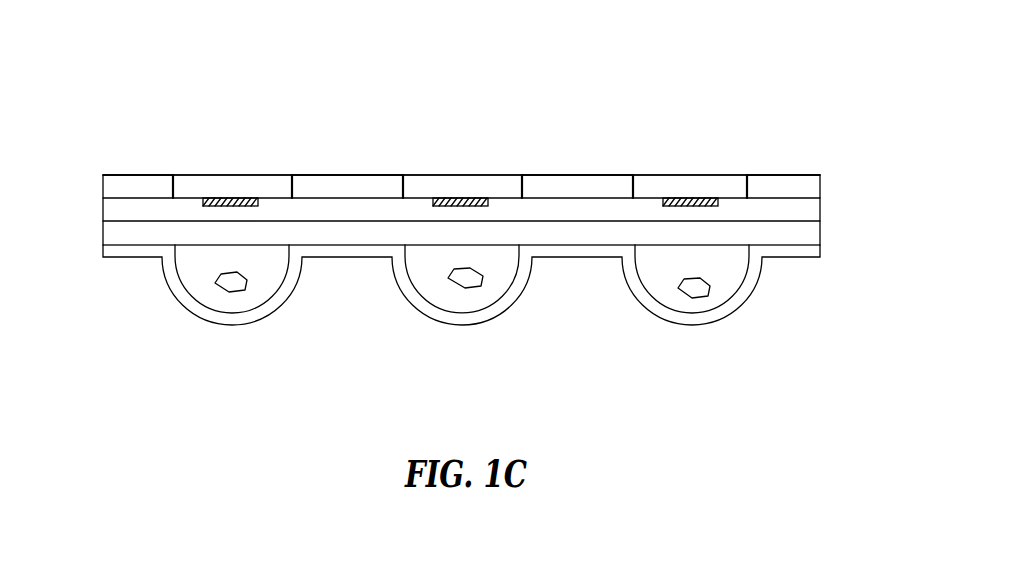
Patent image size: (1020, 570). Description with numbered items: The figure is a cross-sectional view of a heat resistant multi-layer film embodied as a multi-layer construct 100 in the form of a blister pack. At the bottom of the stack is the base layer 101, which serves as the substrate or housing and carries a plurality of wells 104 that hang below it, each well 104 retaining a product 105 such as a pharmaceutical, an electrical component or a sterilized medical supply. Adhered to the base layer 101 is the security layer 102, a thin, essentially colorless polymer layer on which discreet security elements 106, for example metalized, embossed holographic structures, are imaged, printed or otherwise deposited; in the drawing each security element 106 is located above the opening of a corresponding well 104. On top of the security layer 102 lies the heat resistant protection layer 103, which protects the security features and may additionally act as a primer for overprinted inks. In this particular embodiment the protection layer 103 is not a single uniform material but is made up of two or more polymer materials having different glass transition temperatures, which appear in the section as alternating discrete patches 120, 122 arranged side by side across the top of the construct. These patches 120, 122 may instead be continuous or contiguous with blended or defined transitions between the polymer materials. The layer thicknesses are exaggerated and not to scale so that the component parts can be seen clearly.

The multi-layer construct 100 is at (146, 91).
The base layer 101 is at (115, 234).
The security layer 102 is at (808, 210).
The heat resistant protection layer 103 is at (580, 190).
The wells 104 is at (232, 303).
The product 105 is at (218, 283).
The security elements 106 is at (226, 196).
The discrete patch 120 is at (137, 190).
The discrete patch 122 is at (272, 190).